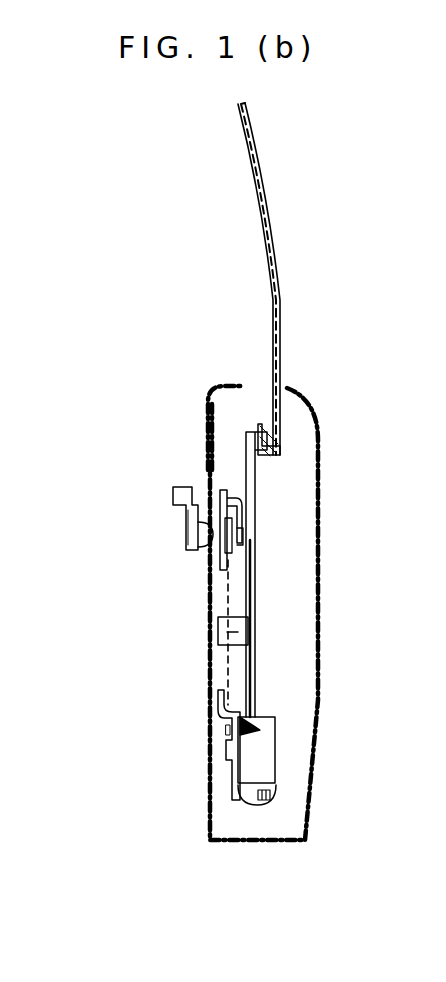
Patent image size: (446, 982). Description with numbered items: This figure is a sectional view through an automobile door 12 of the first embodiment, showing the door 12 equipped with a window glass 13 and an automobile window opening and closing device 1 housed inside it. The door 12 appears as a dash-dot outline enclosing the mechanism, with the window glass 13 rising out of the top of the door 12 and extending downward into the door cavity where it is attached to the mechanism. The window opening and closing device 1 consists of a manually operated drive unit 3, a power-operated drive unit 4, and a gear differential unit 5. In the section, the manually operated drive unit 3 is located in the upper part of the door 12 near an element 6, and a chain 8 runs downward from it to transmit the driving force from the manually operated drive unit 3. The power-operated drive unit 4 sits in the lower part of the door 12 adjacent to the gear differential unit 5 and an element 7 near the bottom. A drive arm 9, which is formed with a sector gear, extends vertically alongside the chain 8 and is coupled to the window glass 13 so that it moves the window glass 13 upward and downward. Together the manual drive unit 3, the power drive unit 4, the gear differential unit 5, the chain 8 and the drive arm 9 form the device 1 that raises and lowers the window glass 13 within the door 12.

The automobile window opening and closing device 1 is at (185, 650).
The manually operated drive unit 3 is at (213, 507).
The power-operated drive unit 4 is at (277, 768).
The gear differential unit 5 is at (253, 742).
The screw 6 is at (203, 536).
The roller 7 is at (266, 800).
The chain 8 is at (227, 588).
The drive arm 9 is at (257, 560).
The door 12 is at (322, 627).
The window glass 13 is at (281, 305).